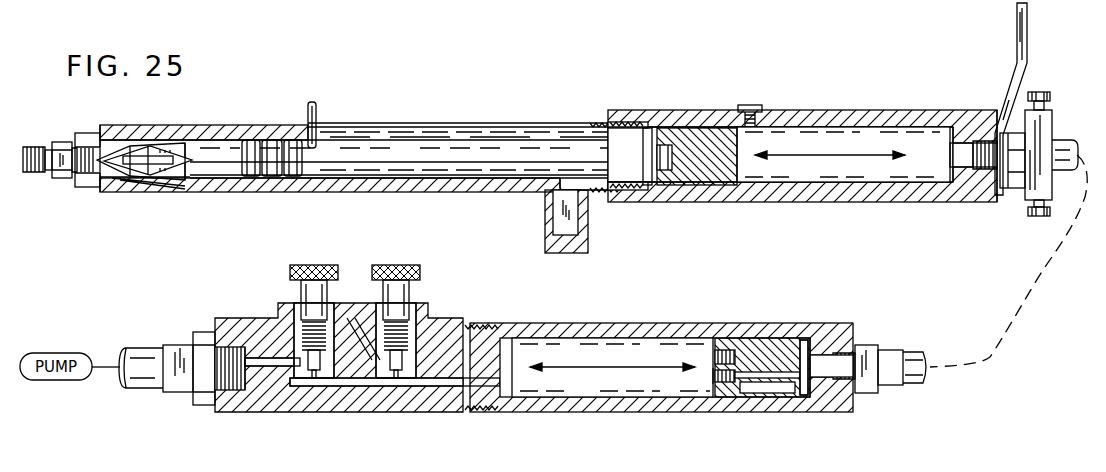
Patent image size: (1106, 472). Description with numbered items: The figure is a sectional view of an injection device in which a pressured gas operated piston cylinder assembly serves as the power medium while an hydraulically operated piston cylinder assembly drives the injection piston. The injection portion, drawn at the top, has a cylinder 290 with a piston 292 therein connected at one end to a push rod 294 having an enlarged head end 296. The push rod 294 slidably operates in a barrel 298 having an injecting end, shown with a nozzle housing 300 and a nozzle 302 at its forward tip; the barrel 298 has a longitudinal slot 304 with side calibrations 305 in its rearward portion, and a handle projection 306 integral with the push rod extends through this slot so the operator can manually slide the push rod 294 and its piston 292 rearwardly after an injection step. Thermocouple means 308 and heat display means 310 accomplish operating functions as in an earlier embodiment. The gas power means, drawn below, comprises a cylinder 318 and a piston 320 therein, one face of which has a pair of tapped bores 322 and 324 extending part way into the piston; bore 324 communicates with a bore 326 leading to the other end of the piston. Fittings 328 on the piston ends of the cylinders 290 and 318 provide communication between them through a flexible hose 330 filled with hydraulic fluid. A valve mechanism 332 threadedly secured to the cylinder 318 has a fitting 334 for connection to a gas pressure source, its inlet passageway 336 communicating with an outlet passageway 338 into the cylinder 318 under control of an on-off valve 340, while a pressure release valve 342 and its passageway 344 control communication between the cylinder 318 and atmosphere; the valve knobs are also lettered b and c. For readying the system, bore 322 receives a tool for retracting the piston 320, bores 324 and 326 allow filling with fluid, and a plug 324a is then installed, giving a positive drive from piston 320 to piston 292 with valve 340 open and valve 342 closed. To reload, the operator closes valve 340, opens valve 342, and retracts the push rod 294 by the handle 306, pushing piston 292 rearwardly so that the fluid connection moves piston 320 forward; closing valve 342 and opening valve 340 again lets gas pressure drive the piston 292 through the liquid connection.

The cylinder 290 is at (875, 115).
The piston 292 is at (710, 140).
The push rod 294 is at (455, 150).
The enlarged head end 296 is at (265, 140).
The barrel 298 is at (222, 126).
The nozzle housing 300 is at (137, 112).
The nozzle 302 is at (165, 150).
The longitudinal slot 304 is at (527, 124).
The side calibrations 305 is at (379, 124).
The handle projection 306 is at (315, 100).
The thermocouple means 308 is at (141, 180).
The heat display means 310 is at (588, 235).
The cylinder 318 is at (624, 323).
The piston 320 is at (760, 345).
The tapped bore 322 is at (713, 355).
The tapped bore 324 is at (718, 385).
The plug 324a is at (713, 375).
The bore 326 is at (775, 385).
The fittings 328 is at (1013, 188).
The flexible hose 330 is at (912, 385).
The valve mechanism 332 is at (460, 316).
The fitting 334 is at (178, 345).
The inlet passageway 336 is at (262, 350).
The outlet passageway 338 is at (378, 394).
The on-off valve 340 is at (319, 300).
The pressure release valve 342 is at (405, 300).
The passageway 344 is at (366, 329).
The valve b knob b is at (300, 262).
The valve c knob c is at (388, 262).